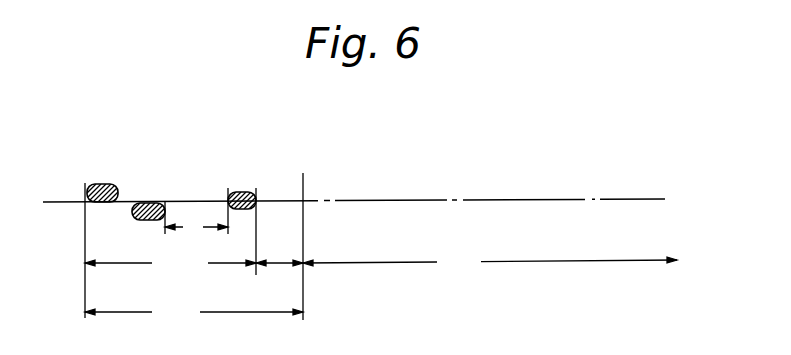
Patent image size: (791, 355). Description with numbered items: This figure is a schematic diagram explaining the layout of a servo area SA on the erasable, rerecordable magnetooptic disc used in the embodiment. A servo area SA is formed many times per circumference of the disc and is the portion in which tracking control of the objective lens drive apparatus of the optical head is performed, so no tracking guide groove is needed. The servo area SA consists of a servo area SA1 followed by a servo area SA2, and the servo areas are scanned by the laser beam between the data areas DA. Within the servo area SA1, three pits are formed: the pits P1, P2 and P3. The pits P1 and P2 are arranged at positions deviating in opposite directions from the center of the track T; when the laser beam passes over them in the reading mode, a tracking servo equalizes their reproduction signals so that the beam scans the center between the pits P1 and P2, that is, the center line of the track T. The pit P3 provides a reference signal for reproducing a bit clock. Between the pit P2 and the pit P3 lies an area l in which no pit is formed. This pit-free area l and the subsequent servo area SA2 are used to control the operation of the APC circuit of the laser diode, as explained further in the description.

The track T is at (624, 199).
The pit P1 is at (100, 183).
The pit P2 is at (152, 203).
The pit P3 is at (243, 192).
The area in which no pit is formed l is at (196, 212).
The servo area SA is at (194, 315).
The servo area SA1 is at (170, 250).
The servo area SA2 is at (280, 265).
The data area DA is at (490, 265).